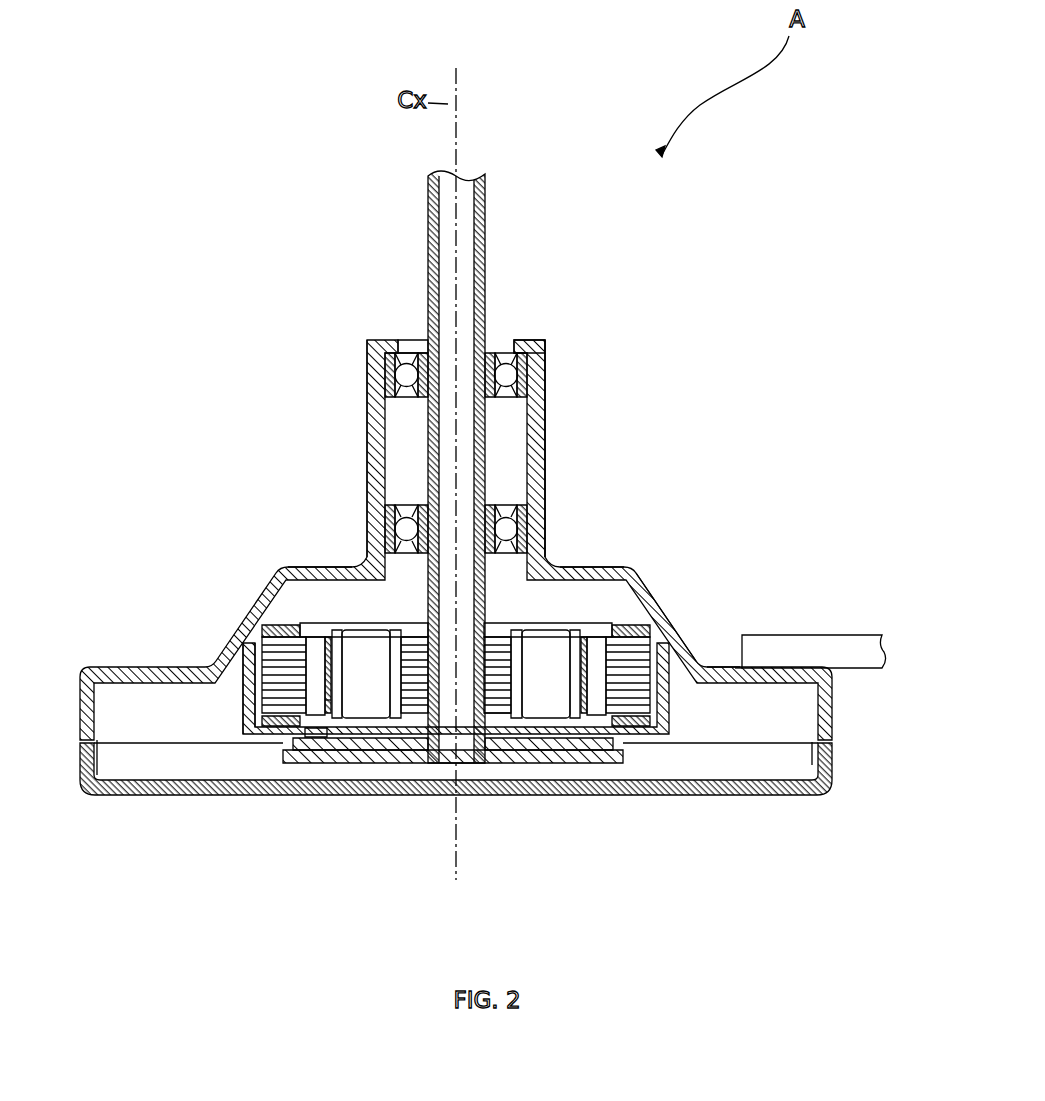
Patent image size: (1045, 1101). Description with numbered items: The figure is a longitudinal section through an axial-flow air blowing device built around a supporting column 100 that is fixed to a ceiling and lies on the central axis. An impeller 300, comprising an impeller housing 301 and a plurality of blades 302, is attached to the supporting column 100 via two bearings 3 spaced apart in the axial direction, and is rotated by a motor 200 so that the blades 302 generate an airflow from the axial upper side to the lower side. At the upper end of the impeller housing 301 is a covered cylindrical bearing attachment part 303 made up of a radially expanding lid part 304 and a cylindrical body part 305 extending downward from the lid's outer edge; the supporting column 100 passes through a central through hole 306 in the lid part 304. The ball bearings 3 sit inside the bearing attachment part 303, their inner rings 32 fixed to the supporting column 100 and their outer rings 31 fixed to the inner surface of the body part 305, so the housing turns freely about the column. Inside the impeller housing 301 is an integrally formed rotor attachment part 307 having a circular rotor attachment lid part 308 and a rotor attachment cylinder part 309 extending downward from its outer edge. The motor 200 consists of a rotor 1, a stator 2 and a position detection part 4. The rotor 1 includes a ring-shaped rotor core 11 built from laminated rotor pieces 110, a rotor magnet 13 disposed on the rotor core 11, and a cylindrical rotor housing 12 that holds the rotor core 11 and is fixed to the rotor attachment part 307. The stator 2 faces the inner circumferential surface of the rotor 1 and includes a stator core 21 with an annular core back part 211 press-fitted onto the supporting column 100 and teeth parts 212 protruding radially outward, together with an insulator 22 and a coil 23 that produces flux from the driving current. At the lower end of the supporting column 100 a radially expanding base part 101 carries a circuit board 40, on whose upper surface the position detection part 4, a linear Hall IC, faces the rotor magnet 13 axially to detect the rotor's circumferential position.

The rotor 1 is at (483, 638).
The stator 2 is at (456, 714).
The bearings 3 is at (411, 428).
The position detection part 4 is at (312, 736).
The rotor core 11 is at (642, 705).
The rotor housing 12 is at (645, 729).
The rotor magnet 13 is at (314, 650).
The stator core 21 is at (497, 718).
The insulator 22 is at (338, 640).
The coil 23 is at (370, 640).
The outer rings 31 is at (385, 372).
The inner rings 32 is at (397, 342).
The circuit board 40 is at (333, 750).
The supporting column 100 is at (486, 207).
The base part 101 is at (613, 757).
The rotor pieces 110 is at (268, 693).
The motor 200 is at (255, 641).
The core back part 211 is at (412, 640).
The teeth parts 212 is at (333, 705).
The impeller 300 is at (569, 561).
The impeller housing 301 is at (624, 567).
The blades 302 is at (848, 645).
The bearing attachment part 303 is at (546, 362).
The lid part 304 is at (516, 342).
The body part 305 is at (540, 406).
The through hole 306 is at (408, 343).
The rotor attachment part 307 is at (718, 548).
The rotor attachment lid part 308 is at (636, 627).
The rotor attachment cylinder part 309 is at (688, 662).